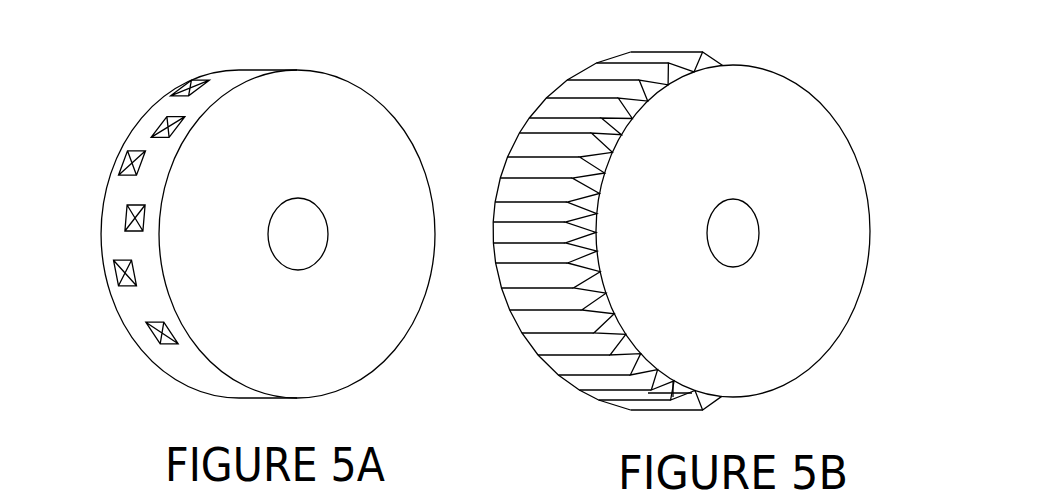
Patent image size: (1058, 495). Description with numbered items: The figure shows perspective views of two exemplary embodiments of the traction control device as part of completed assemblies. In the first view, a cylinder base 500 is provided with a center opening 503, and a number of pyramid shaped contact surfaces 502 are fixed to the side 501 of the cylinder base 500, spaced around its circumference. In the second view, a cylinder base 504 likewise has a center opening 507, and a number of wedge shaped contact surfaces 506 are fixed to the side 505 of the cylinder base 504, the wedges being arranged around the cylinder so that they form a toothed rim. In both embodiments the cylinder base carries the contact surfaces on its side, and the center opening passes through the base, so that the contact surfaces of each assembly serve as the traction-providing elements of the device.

In FIG. 5A, the cylinder base 500 is at (340, 72).
In FIG. 5A, the side 501 is at (233, 78).
In FIG. 5A, the pyramid shaped contact surfaces 502 is at (187, 83).
In FIG. 5A, the center opening 503 is at (305, 248).
In FIG. 5B, the cylinder base 504 is at (812, 92).
In FIG. 5B, the side 505 is at (717, 55).
In FIG. 5B, the wedge shaped contact surfaces 506 is at (568, 97).
In FIG. 5B, the center opening 507 is at (735, 258).